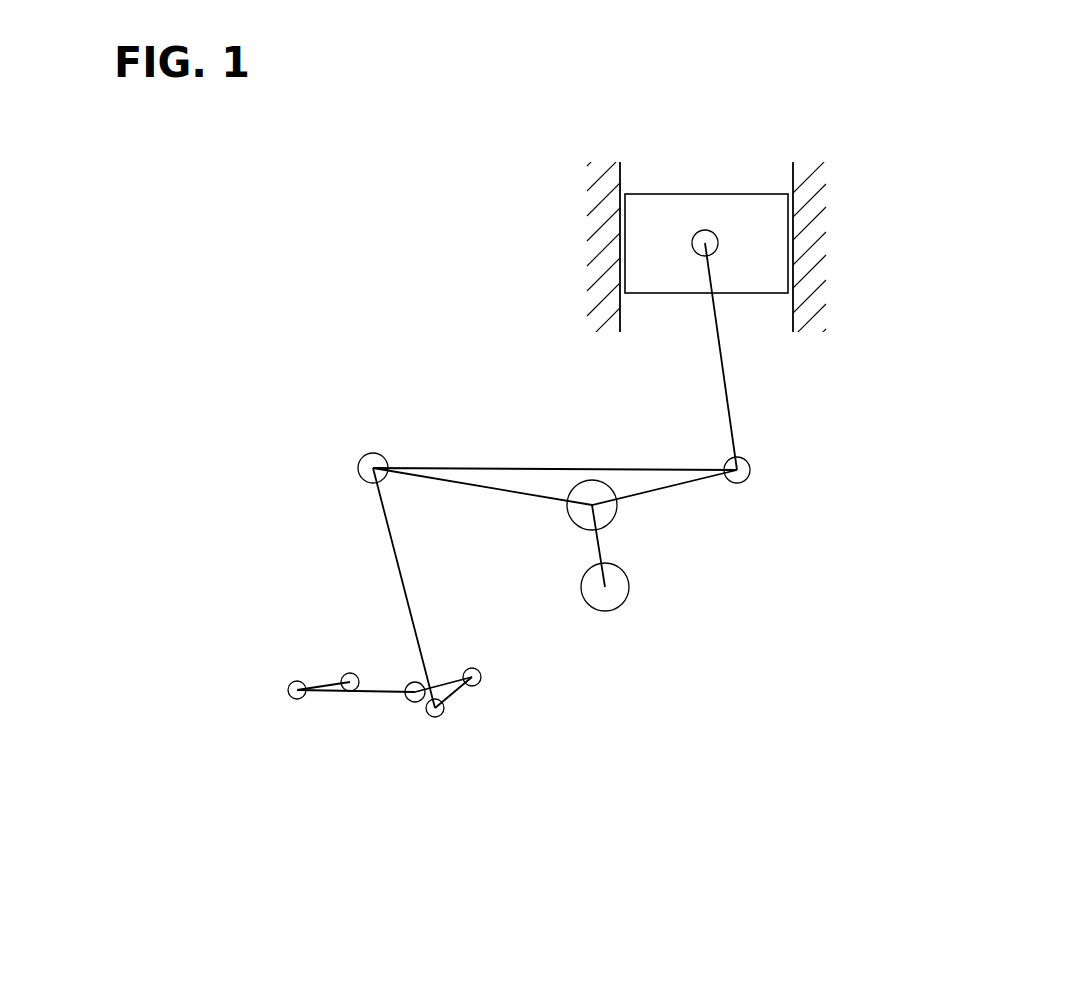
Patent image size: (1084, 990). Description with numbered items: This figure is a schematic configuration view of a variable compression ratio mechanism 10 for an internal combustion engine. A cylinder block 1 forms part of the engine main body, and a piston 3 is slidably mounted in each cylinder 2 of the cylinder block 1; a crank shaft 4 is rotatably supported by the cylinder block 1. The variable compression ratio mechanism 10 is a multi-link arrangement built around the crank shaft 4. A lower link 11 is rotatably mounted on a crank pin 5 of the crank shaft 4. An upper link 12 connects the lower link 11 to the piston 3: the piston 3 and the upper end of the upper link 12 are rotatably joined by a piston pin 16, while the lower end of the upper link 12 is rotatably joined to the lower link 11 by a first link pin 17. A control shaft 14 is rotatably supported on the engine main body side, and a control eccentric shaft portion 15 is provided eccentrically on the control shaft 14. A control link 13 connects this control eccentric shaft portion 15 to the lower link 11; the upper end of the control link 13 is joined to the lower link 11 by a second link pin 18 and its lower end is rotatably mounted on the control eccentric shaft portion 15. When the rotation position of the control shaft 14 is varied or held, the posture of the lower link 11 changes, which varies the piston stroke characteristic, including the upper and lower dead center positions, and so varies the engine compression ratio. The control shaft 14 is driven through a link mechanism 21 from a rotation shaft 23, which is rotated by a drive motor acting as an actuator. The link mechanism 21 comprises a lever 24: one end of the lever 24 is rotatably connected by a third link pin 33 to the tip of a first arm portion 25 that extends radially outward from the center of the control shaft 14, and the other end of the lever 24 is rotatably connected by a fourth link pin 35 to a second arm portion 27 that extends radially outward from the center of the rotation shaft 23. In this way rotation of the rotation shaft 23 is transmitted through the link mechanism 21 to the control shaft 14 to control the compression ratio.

The cylinder block 1 is at (807, 208).
The cylinder 2 is at (792, 191).
The piston 3 is at (667, 196).
The crank shaft 4 is at (632, 602).
The crank pin 5 is at (618, 513).
The variable compression ratio mechanism 10 is at (732, 523).
The lower link 11 is at (557, 468).
The upper link 12 is at (730, 408).
The control link 13 is at (410, 600).
The control shaft 14 is at (485, 682).
The control eccentric shaft portion 15 is at (437, 720).
The piston pin 16 is at (718, 243).
The first link pin 17 is at (751, 470).
The second link pin 18 is at (370, 453).
The link mechanism 21 is at (377, 758).
The rotation shaft 23 is at (341, 670).
The lever 24 is at (385, 690).
The first arm portion 25 is at (448, 680).
The second arm portion 27 is at (325, 686).
The third link pin 33 is at (408, 700).
The fourth link pin 35 is at (293, 700).